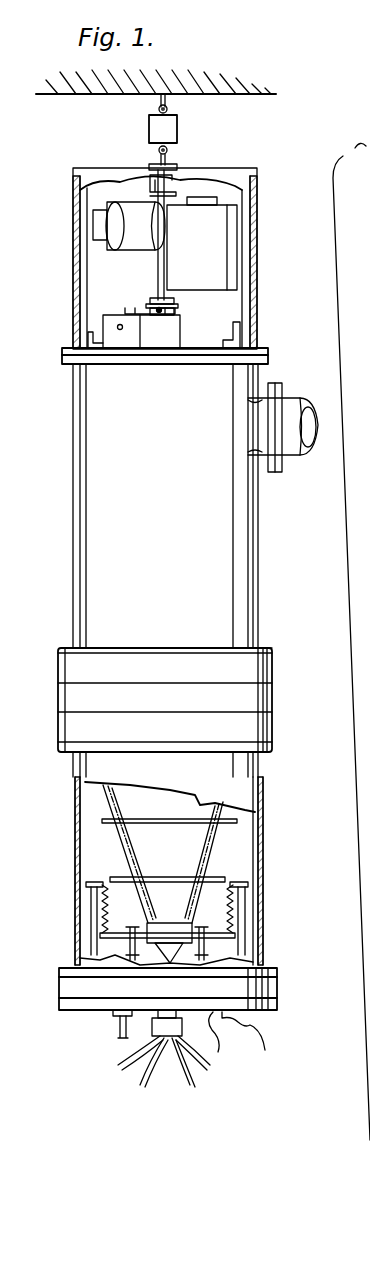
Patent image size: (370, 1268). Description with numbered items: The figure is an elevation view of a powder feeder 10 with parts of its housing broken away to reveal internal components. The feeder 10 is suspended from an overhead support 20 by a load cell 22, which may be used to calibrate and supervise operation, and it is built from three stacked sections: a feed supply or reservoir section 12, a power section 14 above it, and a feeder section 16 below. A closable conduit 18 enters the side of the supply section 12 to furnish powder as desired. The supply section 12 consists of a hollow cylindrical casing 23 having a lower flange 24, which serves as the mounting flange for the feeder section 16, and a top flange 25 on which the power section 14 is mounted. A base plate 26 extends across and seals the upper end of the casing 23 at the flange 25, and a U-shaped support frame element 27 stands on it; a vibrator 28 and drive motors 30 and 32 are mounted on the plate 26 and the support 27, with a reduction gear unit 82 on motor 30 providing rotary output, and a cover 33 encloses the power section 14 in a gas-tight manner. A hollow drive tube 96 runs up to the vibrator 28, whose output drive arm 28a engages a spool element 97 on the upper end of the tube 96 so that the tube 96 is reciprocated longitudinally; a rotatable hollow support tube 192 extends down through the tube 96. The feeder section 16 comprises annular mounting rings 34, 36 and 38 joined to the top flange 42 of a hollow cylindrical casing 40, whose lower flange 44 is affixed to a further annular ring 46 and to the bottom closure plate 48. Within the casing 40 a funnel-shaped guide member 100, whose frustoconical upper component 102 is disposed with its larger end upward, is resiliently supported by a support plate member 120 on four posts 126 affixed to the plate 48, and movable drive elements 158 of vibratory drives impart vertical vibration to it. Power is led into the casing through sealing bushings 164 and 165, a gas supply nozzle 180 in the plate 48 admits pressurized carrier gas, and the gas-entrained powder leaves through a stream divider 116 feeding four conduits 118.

The feeder 10 is at (32, 487).
The feed supply section 12 is at (38, 565).
The power section 14 is at (46, 272).
The feeder section 16 is at (40, 722).
The closable conduit 18 is at (300, 458).
The support 20 is at (100, 95).
The load cell 22 is at (178, 128).
The hollow cylindrical casing 23 is at (246, 566).
The lower flange 24 is at (262, 645).
The top flange 25 is at (262, 360).
The base plate 26 is at (262, 350).
The U-shaped support frame element 27 is at (85, 252).
The vibrator 28 is at (103, 325).
The output drive arm 28a is at (142, 308).
The drive motor 30 is at (232, 253).
The drive motor 32 is at (128, 226).
The cover 33 is at (257, 222).
The annular mounting ring 34 is at (272, 660).
The annular mounting ring 36 is at (265, 692).
The annular mounting ring 38 is at (268, 720).
The hollow cylindrical casing 40 is at (263, 800).
The top flange 42 is at (268, 752).
The lower flange 44 is at (272, 980).
The annular ring 46 is at (277, 992).
The bottom closure plate 48 is at (270, 1015).
The reduction gear unit 82 is at (225, 318).
The hollow drive tube 96 is at (172, 300).
The spool element 97 is at (174, 312).
The funnel-shaped guide member 100 is at (232, 840).
The frustoconical upper component 102 is at (205, 866).
The stream divider 116 is at (148, 1035).
The conduits 118 is at (130, 1078).
The support plate member 120 is at (233, 935).
The posts 126 is at (92, 898).
The movable drive elements 158 is at (103, 946).
The sealing bushing 164 is at (234, 1044).
The sealing bushing 165 is at (269, 1044).
The gas supply nozzle 180 is at (112, 1025).
The rotatable hollow support tube 192 is at (170, 265).